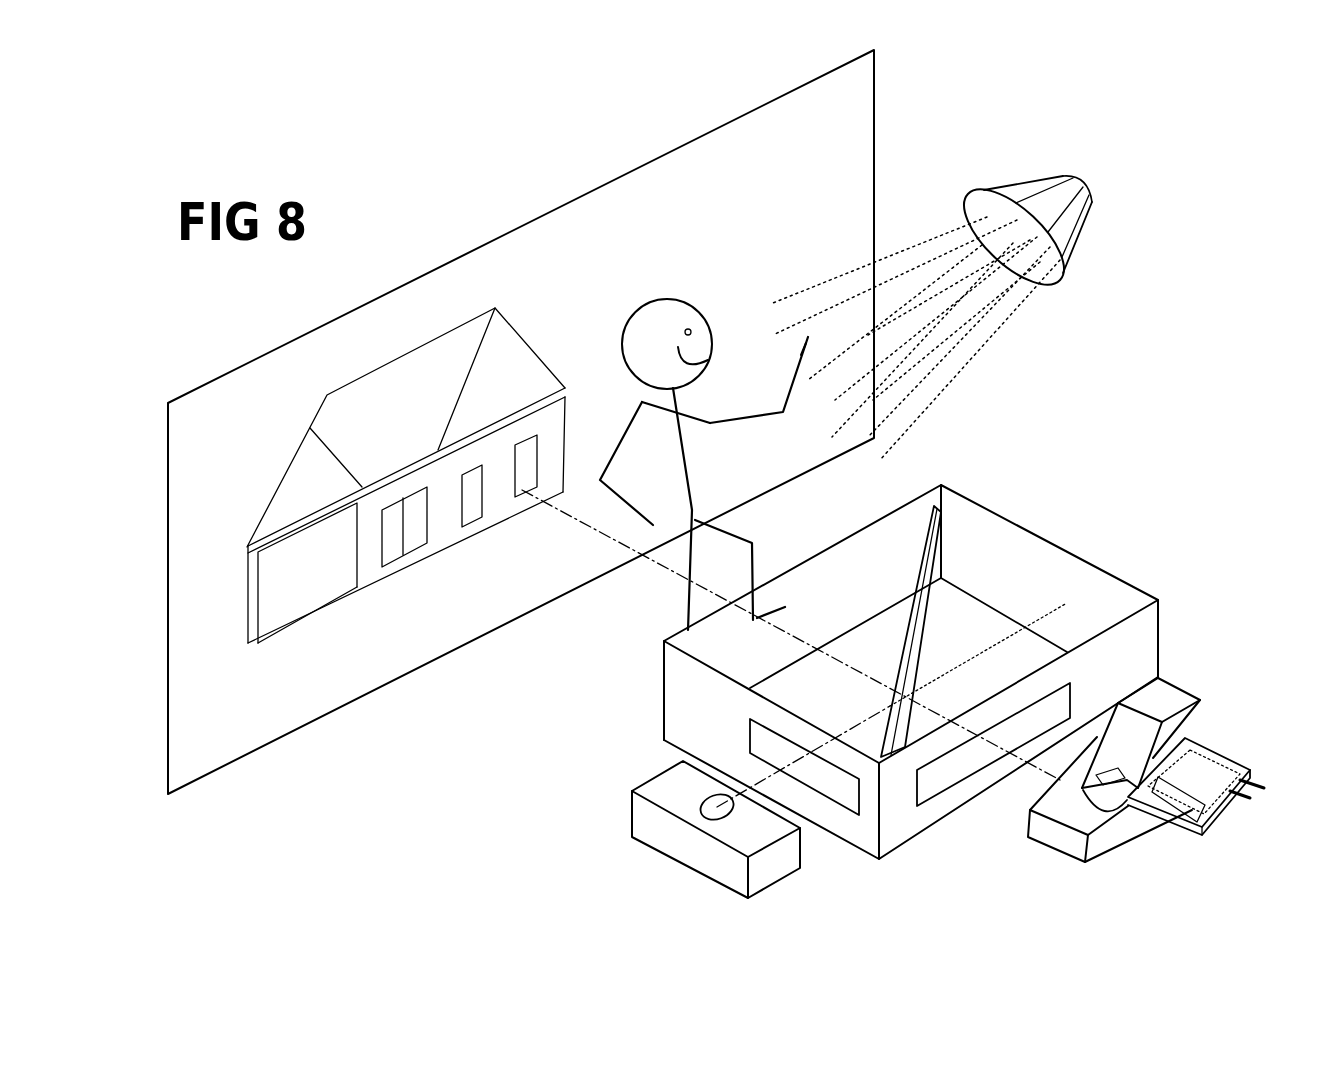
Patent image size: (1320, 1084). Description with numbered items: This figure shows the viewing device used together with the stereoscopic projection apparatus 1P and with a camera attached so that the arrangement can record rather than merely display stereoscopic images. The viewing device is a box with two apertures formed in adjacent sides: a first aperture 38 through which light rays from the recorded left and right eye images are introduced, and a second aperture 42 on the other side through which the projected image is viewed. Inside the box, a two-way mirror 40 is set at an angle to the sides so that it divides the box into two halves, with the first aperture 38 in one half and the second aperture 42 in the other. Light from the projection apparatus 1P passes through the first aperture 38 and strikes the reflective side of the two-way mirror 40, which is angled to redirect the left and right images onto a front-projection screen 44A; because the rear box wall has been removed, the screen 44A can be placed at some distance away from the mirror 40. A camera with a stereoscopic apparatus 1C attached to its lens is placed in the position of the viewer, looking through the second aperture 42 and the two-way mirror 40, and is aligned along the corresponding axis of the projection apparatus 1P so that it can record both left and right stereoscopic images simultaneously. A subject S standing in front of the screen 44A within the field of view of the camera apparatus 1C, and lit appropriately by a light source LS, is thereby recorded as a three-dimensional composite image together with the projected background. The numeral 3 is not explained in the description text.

The front-projection screen 44A is at (342, 677).
The subject S is at (674, 284).
The light source LS is at (1073, 262).
The two-way mirror 40 is at (920, 613).
The first aperture 38 is at (767, 748).
The second aperture 42 is at (1042, 720).
The stereoscopic projection apparatus 1P is at (680, 837).
The camera with stereoscopic apparatus 1C is at (1070, 849).
The imaging unit 3 is at (1168, 695).